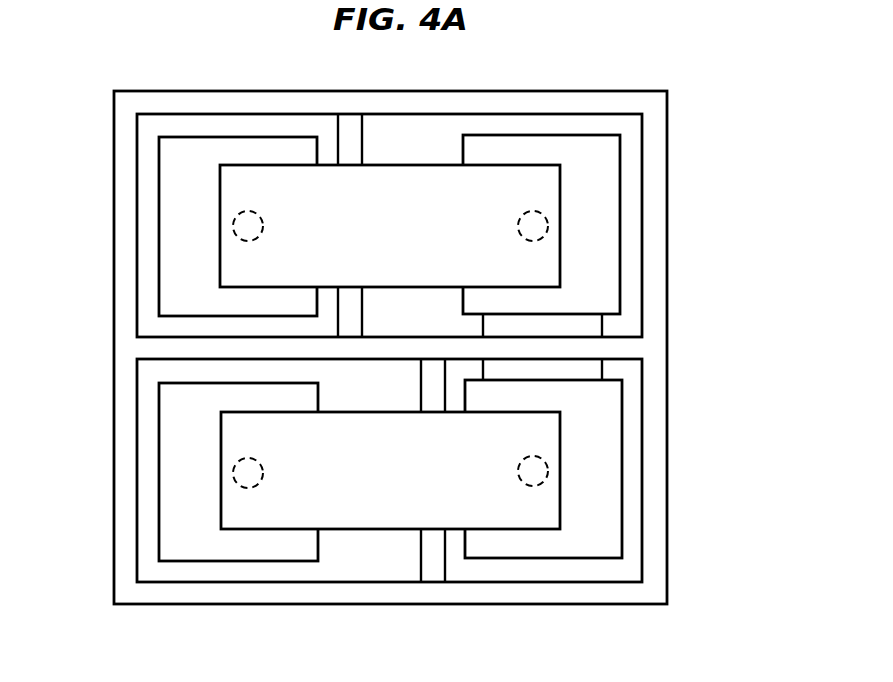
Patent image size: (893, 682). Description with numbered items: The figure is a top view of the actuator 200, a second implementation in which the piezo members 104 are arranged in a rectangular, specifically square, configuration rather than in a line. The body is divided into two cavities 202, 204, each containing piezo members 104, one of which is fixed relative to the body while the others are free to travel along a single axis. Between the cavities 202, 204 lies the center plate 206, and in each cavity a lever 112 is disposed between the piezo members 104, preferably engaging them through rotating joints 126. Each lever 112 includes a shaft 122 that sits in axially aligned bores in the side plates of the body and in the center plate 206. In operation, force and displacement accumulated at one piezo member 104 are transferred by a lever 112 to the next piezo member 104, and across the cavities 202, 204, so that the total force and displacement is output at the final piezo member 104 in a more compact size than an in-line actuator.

The actuator 200 is at (138, 78).
The cavity 202 is at (418, 125).
The cavity 204 is at (363, 570).
The center plate 206 is at (628, 348).
The piezo member 104 is at (167, 303).
The lever 112 is at (507, 182).
The shaft 122 is at (348, 128).
The rotating joint 126 is at (556, 462).